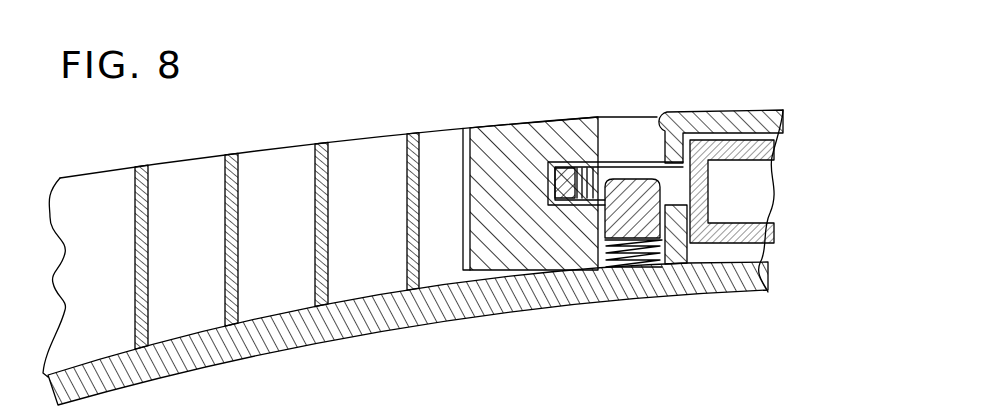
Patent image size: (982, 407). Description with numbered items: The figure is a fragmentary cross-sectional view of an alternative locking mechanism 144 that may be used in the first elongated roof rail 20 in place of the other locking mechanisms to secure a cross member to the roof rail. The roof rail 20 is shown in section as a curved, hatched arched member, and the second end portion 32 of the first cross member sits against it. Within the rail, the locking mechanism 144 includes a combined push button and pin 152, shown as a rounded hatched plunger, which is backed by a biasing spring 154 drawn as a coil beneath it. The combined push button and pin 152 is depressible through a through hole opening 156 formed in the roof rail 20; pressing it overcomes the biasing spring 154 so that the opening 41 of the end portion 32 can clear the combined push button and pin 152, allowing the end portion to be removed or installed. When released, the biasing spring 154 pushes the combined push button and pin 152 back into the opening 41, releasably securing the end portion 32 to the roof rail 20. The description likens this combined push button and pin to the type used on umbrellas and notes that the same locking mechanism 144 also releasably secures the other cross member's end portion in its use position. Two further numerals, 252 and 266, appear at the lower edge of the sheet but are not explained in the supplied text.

The first elongated roof rail 20 is at (273, 180).
The second end portion 32 is at (562, 166).
The opening 41 is at (593, 182).
The alternative locking mechanism 144 is at (570, 71).
The combined push button and pin 152 is at (637, 179).
The biasing spring 154 is at (693, 295).
The through hole opening 156 is at (660, 118).
The support member 252 is at (592, 406).
The mounting member 266 is at (529, 397).